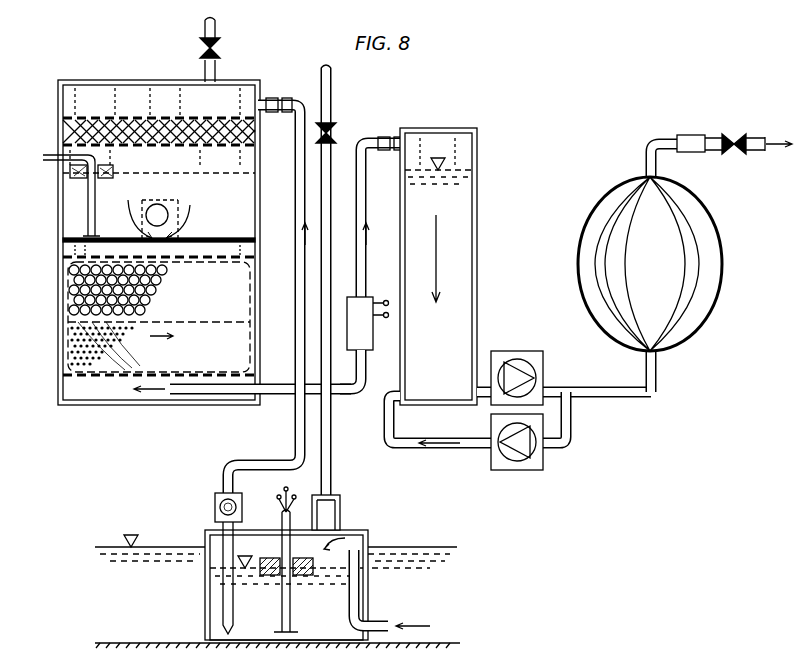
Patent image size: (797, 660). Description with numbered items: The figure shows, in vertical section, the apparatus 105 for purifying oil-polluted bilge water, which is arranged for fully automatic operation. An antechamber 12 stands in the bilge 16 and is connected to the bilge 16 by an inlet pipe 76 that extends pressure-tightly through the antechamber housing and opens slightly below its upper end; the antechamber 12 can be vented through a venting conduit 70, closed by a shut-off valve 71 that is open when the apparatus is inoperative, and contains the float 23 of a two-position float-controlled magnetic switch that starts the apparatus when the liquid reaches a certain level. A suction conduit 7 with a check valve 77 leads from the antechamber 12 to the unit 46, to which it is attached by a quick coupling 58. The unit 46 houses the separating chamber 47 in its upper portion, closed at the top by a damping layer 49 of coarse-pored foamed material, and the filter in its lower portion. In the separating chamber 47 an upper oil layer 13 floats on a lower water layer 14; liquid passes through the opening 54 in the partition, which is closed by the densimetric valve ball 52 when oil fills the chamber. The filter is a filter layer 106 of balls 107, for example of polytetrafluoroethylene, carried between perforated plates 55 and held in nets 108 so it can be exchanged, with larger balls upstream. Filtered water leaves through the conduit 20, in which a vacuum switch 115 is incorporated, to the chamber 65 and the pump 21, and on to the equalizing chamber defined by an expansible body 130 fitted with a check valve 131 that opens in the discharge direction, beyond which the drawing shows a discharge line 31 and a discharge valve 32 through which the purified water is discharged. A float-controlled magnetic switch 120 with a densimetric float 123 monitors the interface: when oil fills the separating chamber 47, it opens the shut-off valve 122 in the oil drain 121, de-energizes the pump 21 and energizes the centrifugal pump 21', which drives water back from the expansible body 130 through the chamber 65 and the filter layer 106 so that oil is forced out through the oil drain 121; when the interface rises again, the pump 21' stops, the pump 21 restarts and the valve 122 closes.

The unit 46 is at (119, 72).
The damping layer 49 is at (78, 134).
The oil drain 121 is at (205, 73).
The shut-off valve 122 is at (202, 45).
The densimetric float 123 is at (72, 169).
The float-controlled magnetic switch 120 is at (83, 183).
The oil layer 13 is at (246, 158).
The water layer 14 is at (246, 186).
The separating chamber 47 is at (70, 222).
The densimetric valve ball 52 is at (170, 212).
The opening 54 is at (160, 243).
The perforated plates 55 is at (78, 269).
The balls 107 is at (62, 306).
The filter layer 106 is at (72, 330).
The nets 108 is at (252, 300).
The conduit 20 is at (270, 403).
The quick coupling 58 is at (273, 97).
The suction conduit 7 is at (222, 471).
The shut-off valve 71 is at (329, 126).
The vacuum switch 115 is at (356, 365).
The chamber 65 is at (448, 219).
The pump 21 is at (564, 360).
The centrifugal pump 21' is at (477, 444).
The expansible body 130 is at (586, 220).
The check valve 131 is at (688, 137).
The outlet pipe 31 is at (713, 153).
The outlet valve 32 is at (741, 153).
The check valve 77 is at (215, 507).
The antechamber 12 is at (200, 598).
The bilge 16 is at (432, 563).
The float 23 is at (268, 556).
The venting conduit 70 is at (333, 460).
The inlet pipe 76 is at (373, 622).
The apparatus 105 is at (441, 485).